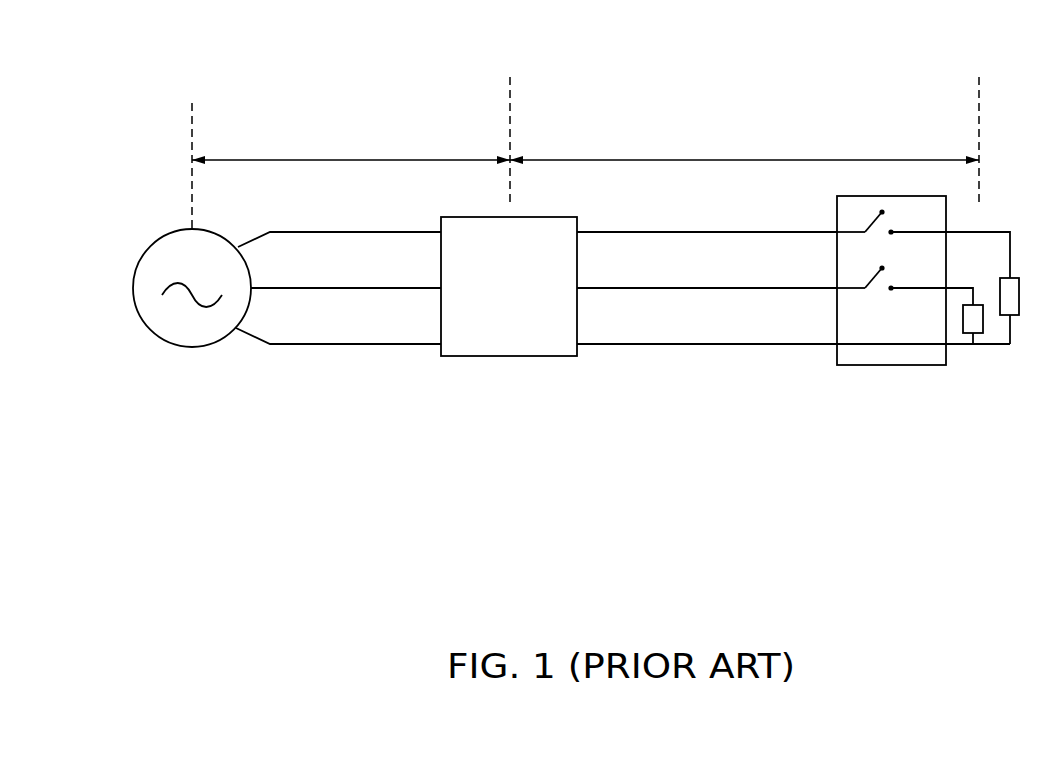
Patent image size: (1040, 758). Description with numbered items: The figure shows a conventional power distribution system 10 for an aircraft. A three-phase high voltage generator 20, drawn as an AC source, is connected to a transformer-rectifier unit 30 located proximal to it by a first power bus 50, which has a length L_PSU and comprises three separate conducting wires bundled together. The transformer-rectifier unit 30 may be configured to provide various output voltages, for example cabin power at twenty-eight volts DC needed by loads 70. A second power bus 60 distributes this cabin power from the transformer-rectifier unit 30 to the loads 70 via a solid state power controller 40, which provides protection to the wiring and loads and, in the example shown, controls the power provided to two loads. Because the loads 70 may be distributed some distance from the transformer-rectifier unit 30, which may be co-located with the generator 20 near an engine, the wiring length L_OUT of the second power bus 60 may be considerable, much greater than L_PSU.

The power distribution system 10 is at (136, 80).
The generator 20 is at (153, 333).
The transformer-rectifier unit 30 is at (502, 357).
The solid state power controller 40 is at (883, 365).
The first power bus 50 is at (311, 382).
The second power bus 60 is at (697, 382).
The loads 70 is at (990, 365).